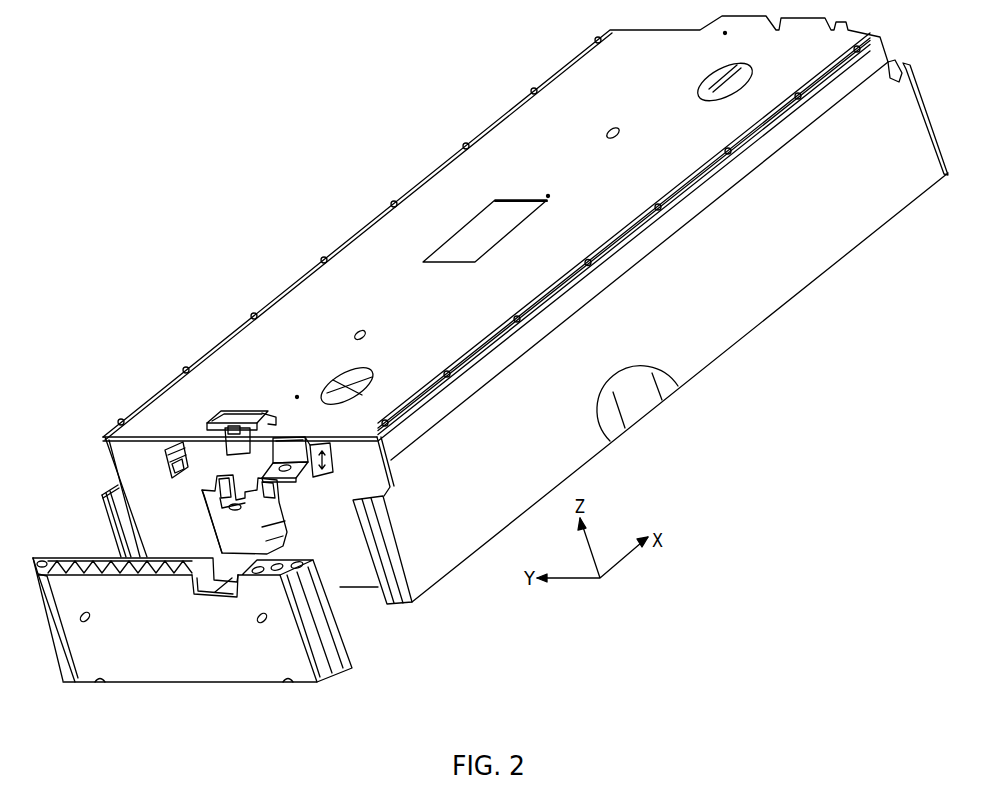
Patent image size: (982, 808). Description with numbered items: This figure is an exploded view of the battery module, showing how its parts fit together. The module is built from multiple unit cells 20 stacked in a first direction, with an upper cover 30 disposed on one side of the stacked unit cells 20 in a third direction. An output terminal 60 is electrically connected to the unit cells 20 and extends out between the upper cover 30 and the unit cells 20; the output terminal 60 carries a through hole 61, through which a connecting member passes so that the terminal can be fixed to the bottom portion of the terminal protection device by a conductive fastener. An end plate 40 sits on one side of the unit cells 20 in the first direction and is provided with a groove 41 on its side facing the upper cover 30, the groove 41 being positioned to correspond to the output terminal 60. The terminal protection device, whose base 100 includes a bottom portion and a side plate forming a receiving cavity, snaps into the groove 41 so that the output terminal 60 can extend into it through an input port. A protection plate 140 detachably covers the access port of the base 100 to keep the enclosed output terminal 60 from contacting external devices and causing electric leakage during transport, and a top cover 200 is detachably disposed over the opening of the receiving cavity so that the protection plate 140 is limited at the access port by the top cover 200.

The unit cells 20 is at (642, 400).
The upper cover 30 is at (235, 352).
The end plate 40 is at (187, 662).
The groove 41 is at (217, 597).
The output terminal 60 is at (285, 450).
The through hole 61 is at (288, 476).
The base 100 is at (223, 528).
The protection plate 140 is at (165, 463).
The top cover 200 is at (245, 420).